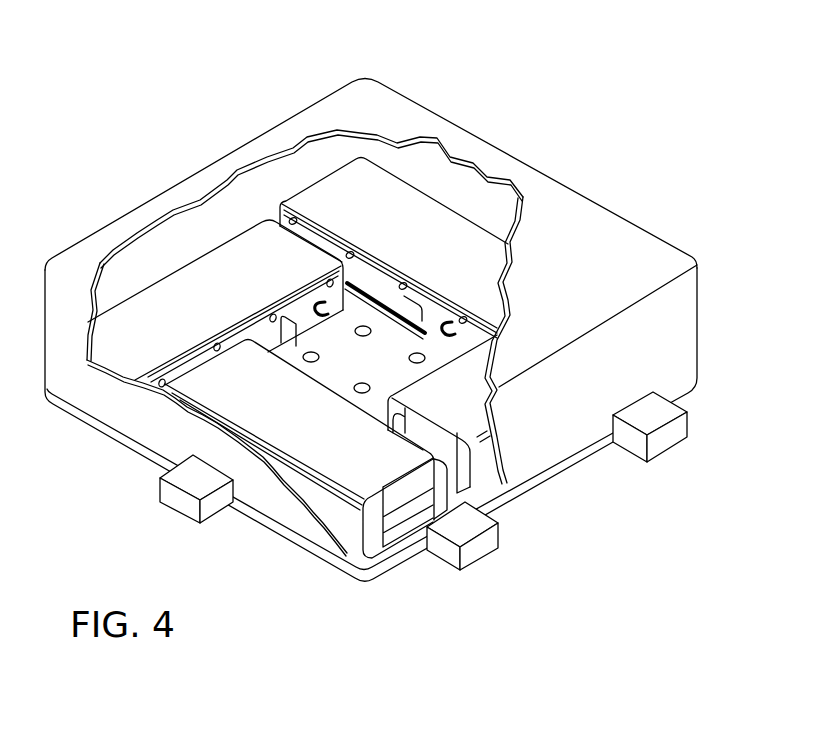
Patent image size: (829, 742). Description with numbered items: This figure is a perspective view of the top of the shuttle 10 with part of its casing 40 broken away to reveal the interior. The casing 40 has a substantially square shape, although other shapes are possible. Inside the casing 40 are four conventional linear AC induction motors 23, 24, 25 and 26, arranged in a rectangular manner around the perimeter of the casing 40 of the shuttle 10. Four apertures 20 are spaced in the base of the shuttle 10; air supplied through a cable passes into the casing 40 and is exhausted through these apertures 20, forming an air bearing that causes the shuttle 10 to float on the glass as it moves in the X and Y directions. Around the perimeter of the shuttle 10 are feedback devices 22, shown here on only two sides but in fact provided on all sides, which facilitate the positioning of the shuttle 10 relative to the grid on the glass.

The shuttle 10 is at (596, 204).
The casing 40 is at (383, 88).
The apertures 20 is at (364, 326).
The feedback devices 22 is at (183, 507).
The linear AC induction motor 23 is at (373, 221).
The linear AC induction motor 24 is at (223, 314).
The linear AC induction motor 25 is at (284, 417).
The linear AC induction motor 26 is at (479, 411).